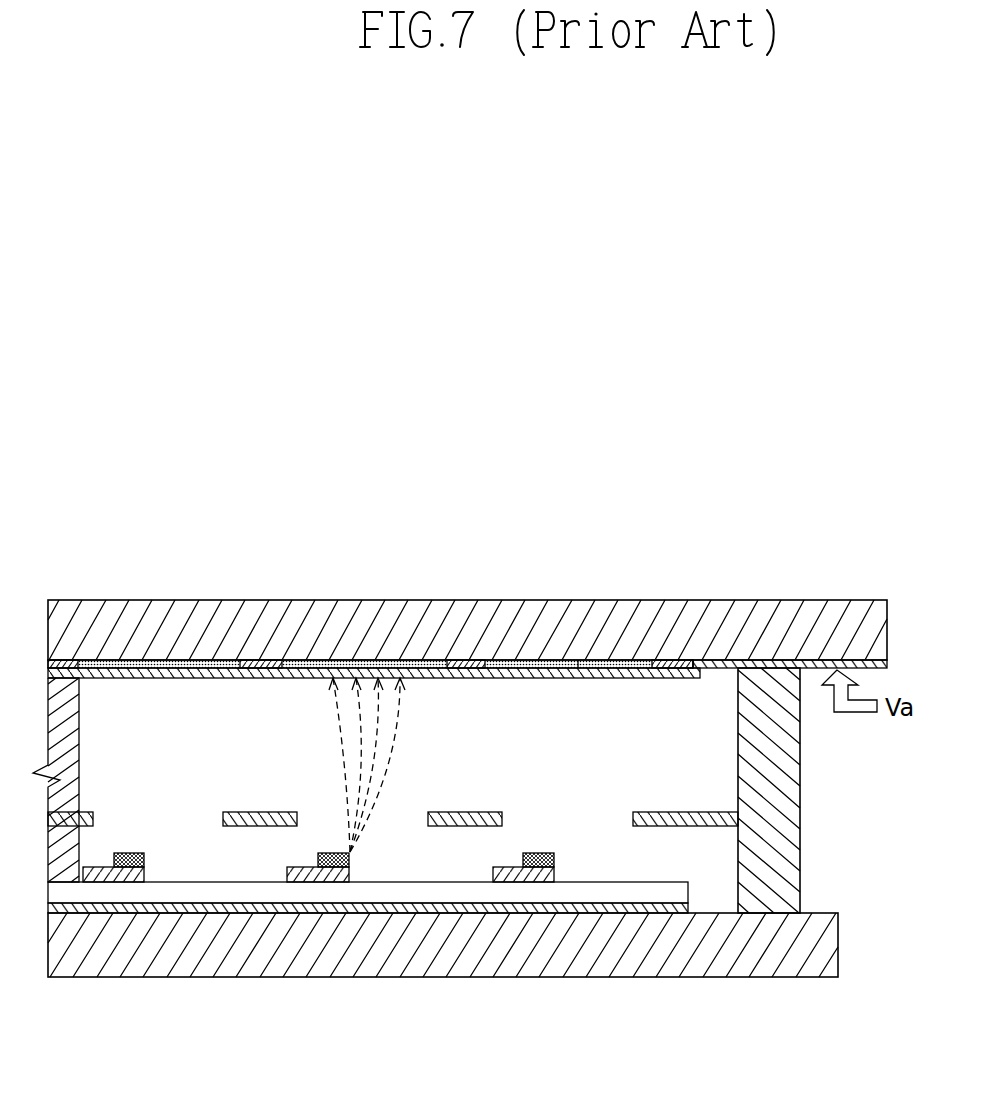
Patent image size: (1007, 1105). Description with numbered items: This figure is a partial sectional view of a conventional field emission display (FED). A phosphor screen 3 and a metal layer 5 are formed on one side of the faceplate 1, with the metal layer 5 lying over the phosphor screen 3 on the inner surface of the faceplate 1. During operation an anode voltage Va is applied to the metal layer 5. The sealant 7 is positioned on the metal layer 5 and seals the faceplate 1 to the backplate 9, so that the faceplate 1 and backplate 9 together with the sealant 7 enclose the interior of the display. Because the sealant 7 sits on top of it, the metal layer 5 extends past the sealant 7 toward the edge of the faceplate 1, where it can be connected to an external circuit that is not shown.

The faceplate 1 is at (288, 600).
The phosphor screen 3 is at (366, 656).
The metal layer 5 is at (578, 660).
The sealant 7 is at (790, 818).
The backplate 9 is at (330, 977).